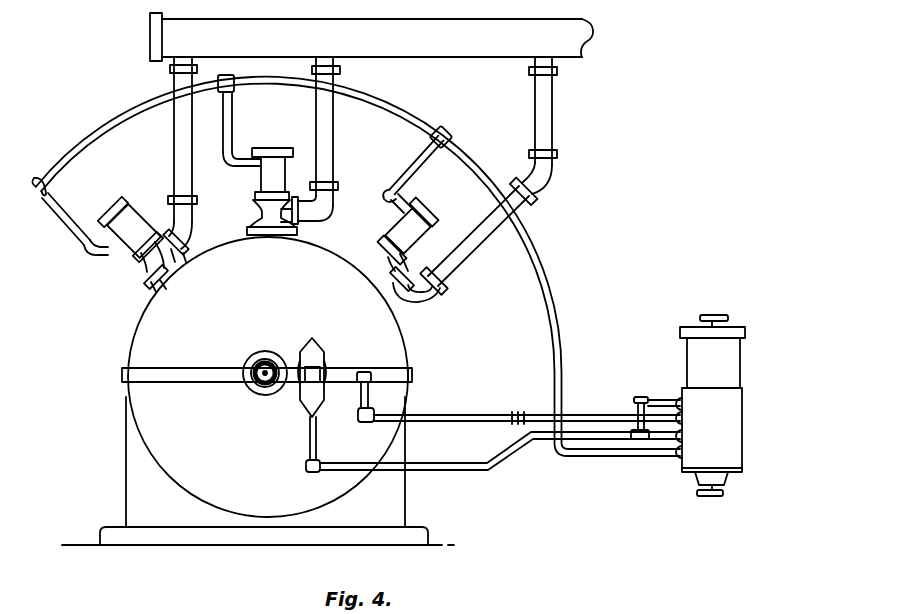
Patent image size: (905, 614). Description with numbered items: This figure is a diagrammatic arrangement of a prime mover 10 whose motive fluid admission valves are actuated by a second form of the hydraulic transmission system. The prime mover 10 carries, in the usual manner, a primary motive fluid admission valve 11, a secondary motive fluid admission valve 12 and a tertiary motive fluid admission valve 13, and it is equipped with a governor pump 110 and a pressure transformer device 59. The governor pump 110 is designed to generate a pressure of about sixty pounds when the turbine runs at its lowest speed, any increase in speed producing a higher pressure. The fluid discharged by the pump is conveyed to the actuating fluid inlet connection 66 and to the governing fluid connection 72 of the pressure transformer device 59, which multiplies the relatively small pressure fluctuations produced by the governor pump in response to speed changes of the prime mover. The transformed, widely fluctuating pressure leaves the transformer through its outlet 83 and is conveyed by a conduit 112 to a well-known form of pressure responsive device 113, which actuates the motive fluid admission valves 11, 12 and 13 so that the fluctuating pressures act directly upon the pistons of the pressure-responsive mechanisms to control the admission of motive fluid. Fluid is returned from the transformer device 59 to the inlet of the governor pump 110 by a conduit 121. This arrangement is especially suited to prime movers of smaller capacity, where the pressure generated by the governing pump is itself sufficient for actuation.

The prime mover 10 is at (130, 446).
The primary motive fluid admission valve 11 is at (368, 250).
The secondary motive fluid admission valve 12 is at (260, 207).
The tertiary motive fluid admission valve 13 is at (150, 268).
The pressure transformer device 59 is at (732, 428).
The actuating fluid inlet connection 66 is at (679, 399).
The governing fluid connection 72 is at (663, 441).
The outlet 83 is at (680, 470).
The governor pump 110 is at (312, 338).
The conduit 112 is at (561, 341).
The pressure responsive device 113 is at (138, 214).
The conduit 121 is at (469, 412).